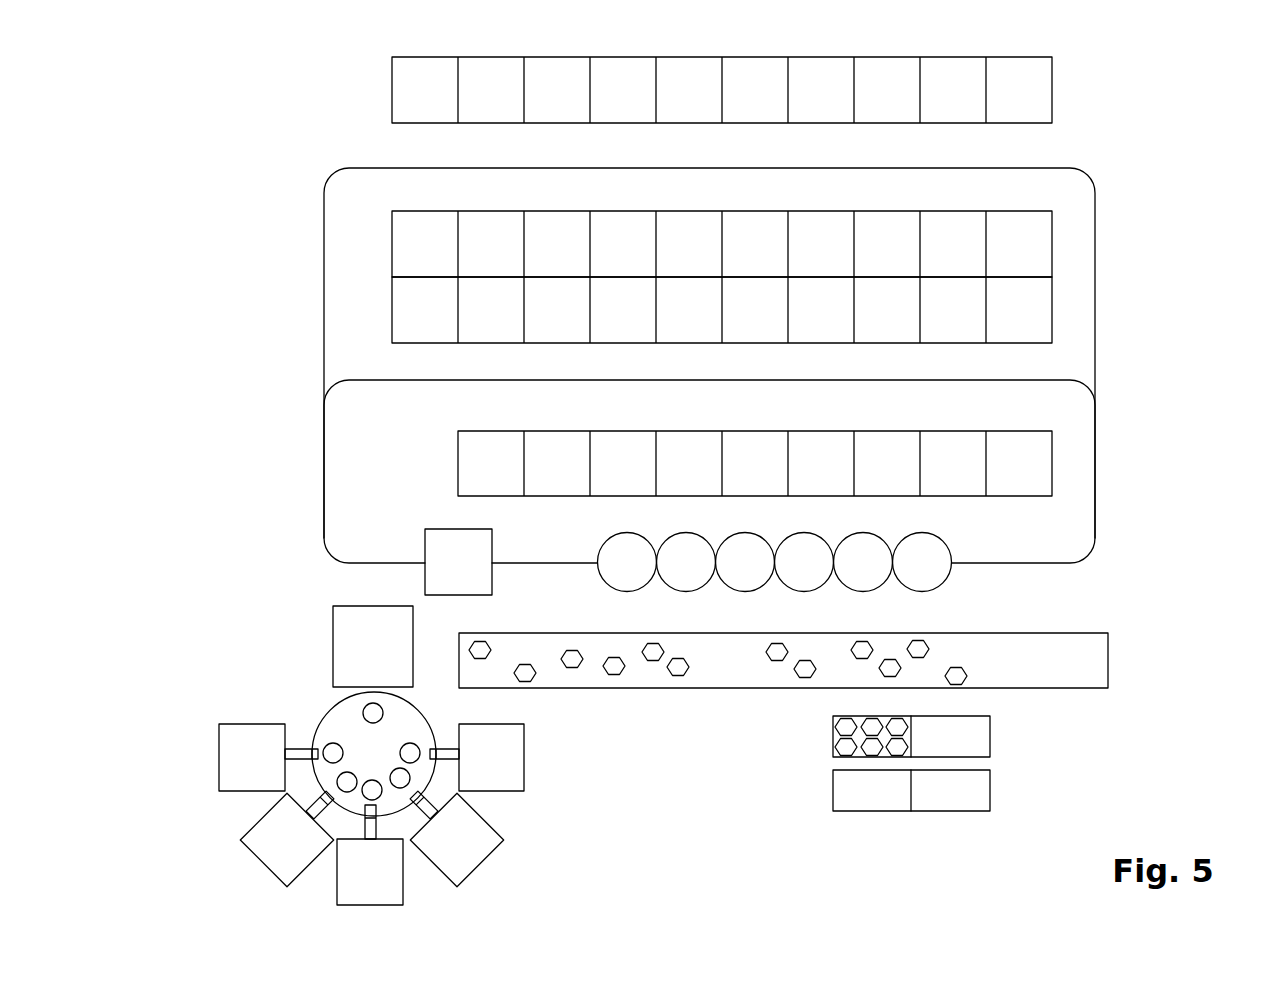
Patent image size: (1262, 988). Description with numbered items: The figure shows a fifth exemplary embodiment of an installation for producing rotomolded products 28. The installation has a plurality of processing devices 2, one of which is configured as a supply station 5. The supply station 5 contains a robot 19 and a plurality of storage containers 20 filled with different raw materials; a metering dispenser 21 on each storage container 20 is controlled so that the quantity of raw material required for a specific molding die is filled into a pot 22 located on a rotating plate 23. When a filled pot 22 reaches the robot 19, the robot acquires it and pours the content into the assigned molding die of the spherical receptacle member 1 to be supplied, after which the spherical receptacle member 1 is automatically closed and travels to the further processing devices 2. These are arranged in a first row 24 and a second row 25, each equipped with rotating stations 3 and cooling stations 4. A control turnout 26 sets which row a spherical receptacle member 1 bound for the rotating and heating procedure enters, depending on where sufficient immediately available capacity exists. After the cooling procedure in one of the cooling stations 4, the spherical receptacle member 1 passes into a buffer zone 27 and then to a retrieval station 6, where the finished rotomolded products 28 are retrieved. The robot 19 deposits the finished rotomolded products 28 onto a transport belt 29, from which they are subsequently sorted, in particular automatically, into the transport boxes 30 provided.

The spherical receptacle member 1 is at (620, 550).
The processing device 2 is at (311, 92).
The rotating station 3 is at (425, 70).
The cooling station 4 is at (422, 230).
The supply station 5 is at (235, 647).
The retrieval station 6 is at (435, 546).
The robot 19 is at (343, 640).
The storage container 20 is at (227, 757).
The metering dispenser 21 is at (300, 748).
The pot 22 is at (369, 716).
The rotating plate 23 is at (334, 723).
The first row 24 is at (1152, 176).
The second row 25 is at (1152, 392).
The control turnout 26 is at (290, 403).
The buffer zone 27 is at (998, 594).
The rotomolded product 28 is at (653, 648).
The transport belt 29 is at (1076, 647).
The transport box 30 is at (1022, 742).